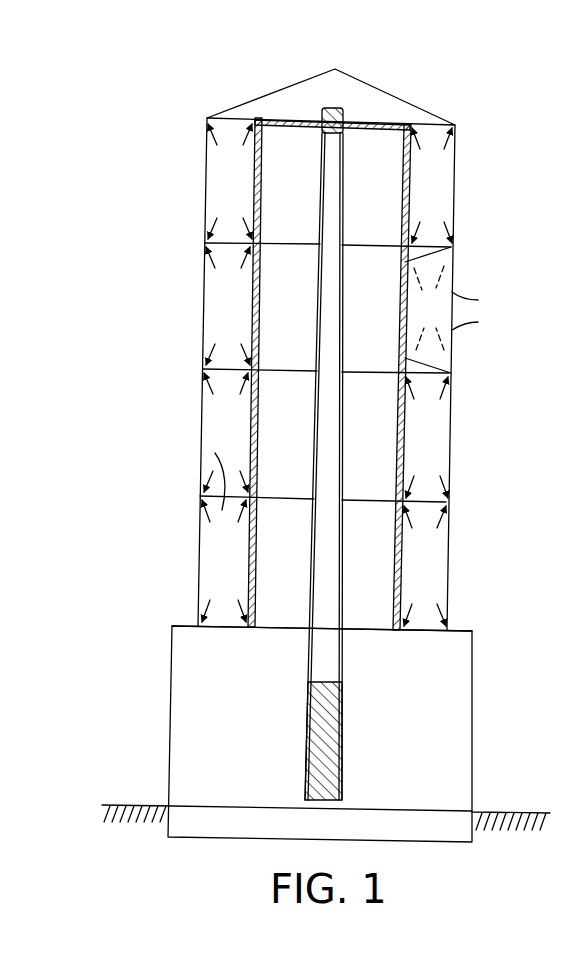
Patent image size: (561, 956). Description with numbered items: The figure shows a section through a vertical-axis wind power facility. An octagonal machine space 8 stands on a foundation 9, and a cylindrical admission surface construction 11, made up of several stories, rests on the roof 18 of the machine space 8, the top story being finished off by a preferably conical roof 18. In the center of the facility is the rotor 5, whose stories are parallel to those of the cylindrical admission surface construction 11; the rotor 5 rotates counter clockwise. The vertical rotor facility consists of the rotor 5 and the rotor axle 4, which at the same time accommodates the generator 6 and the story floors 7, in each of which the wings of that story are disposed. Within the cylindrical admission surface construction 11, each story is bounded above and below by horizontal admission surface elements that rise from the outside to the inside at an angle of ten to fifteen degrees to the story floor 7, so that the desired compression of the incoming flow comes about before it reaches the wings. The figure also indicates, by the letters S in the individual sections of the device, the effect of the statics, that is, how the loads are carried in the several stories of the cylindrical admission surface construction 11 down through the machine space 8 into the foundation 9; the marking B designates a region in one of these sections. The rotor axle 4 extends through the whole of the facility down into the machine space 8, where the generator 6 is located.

The roof 18 is at (397, 97).
The story floor 7 is at (452, 250).
The bracing B is at (452, 330).
The cylindrical admission surface construction 11 is at (222, 460).
The generator 6 is at (327, 441).
The rotor 5 is at (368, 473).
The machine space 8 is at (200, 673).
The foundation 9 is at (205, 820).
The rotor axle 4 is at (342, 718).